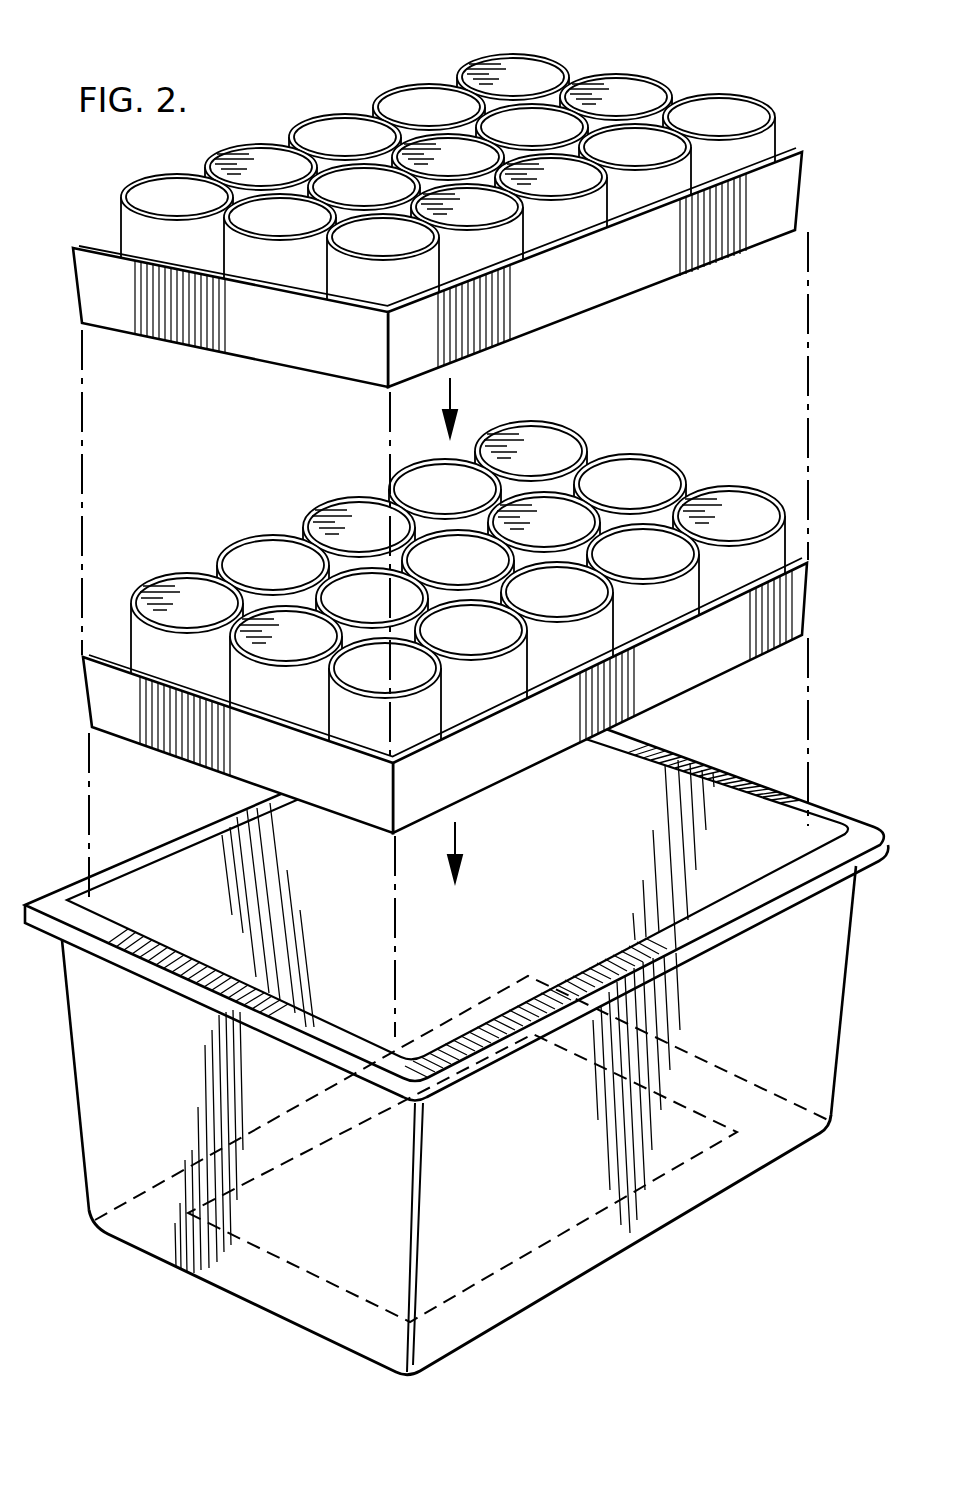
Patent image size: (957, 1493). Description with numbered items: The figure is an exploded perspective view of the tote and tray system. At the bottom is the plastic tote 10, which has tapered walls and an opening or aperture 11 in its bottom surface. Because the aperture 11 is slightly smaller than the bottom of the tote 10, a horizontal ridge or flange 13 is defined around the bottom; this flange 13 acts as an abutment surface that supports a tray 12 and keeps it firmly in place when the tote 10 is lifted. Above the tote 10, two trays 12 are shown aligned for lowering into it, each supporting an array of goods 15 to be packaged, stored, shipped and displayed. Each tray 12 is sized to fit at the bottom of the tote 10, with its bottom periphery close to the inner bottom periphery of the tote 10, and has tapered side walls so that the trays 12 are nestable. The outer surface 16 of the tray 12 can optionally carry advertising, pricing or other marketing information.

The plastic tote 10 is at (843, 1038).
The aperture 11 is at (283, 1230).
The tray 12 is at (802, 197).
The flange 13 is at (722, 1153).
The goods 15 is at (563, 62).
The outer surface 16 is at (742, 230).